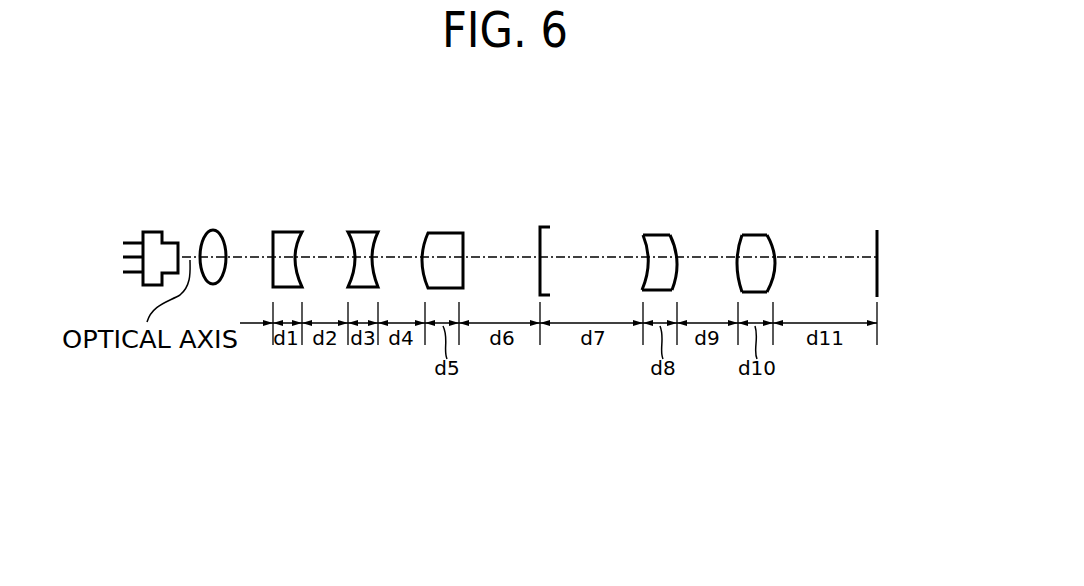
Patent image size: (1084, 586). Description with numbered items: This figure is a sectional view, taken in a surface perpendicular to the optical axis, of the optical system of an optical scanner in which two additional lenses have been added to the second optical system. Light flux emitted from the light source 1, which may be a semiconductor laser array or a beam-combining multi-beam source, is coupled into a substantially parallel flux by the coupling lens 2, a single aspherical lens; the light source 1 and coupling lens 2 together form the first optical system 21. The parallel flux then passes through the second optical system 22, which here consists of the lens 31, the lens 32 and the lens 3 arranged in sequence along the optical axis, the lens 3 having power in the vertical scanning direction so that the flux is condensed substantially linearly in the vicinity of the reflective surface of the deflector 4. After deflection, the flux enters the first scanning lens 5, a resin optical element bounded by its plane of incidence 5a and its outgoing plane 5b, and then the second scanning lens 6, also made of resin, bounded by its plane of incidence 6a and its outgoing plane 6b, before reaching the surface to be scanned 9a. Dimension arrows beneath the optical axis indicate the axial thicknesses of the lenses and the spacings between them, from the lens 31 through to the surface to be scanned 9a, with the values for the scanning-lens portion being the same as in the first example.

The light source 1 is at (152, 231).
The coupling lens 2 is at (212, 230).
The first optical system 21 is at (115, 162).
The second optical system 22 is at (460, 162).
The lens 31 is at (284, 231).
The lens 32 is at (362, 231).
The lens 3 is at (446, 232).
The deflector 4 is at (546, 243).
The first scanning lens 5 is at (658, 240).
The plane of the first scanning lens 5a is at (644, 247).
The plane of the first scanning lens 5b is at (679, 247).
The second scanning lens 6 is at (756, 242).
The plane of incidence of the second scanning lens 6a is at (739, 248).
The outgoing plane of the second scanning lens 6b is at (774, 248).
The surface to be scanned 9a is at (878, 257).